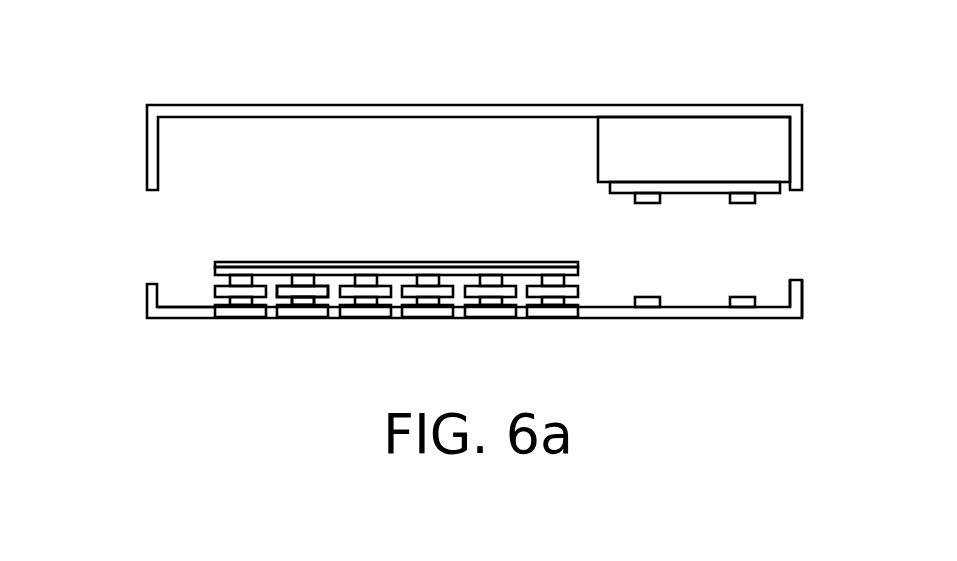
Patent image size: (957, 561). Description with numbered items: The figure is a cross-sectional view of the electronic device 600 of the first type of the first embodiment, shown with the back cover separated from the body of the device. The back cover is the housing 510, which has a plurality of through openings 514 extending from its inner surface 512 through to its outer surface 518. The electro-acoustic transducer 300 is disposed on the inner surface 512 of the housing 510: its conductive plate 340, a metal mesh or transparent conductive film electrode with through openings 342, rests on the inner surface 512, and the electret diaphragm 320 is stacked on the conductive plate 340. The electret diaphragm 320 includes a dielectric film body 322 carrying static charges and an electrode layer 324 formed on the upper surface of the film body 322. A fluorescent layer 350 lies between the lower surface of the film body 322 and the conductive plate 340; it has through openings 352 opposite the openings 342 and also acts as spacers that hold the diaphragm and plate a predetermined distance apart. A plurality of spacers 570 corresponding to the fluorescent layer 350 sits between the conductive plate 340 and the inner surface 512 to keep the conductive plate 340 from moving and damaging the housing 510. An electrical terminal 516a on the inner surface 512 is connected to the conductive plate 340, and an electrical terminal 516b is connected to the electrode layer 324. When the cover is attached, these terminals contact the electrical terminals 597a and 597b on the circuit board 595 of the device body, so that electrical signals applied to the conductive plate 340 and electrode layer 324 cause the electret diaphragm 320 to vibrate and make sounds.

The electronic device 600 is at (185, 81).
The electro-acoustic transducer 300 is at (345, 209).
The electret diaphragm 320 is at (345, 231).
The film body 322 is at (579, 271).
The electrode layer 324 is at (580, 262).
The through openings 342 is at (302, 261).
The fluorescent layer 350 is at (578, 292).
The through openings 352 is at (521, 288).
The through openings 514 is at (270, 316).
The outer surface 518 is at (227, 319).
The spacers 570 is at (302, 304).
The conductive plate 340 is at (204, 309).
The housing 510 is at (472, 305).
The inner surface 512 is at (774, 302).
The electrical terminal 516a is at (653, 303).
The electrical terminal 516b is at (749, 303).
The circuit board 595 is at (724, 151).
The electrical terminal 597a is at (652, 194).
The electrical terminal 597b is at (747, 194).